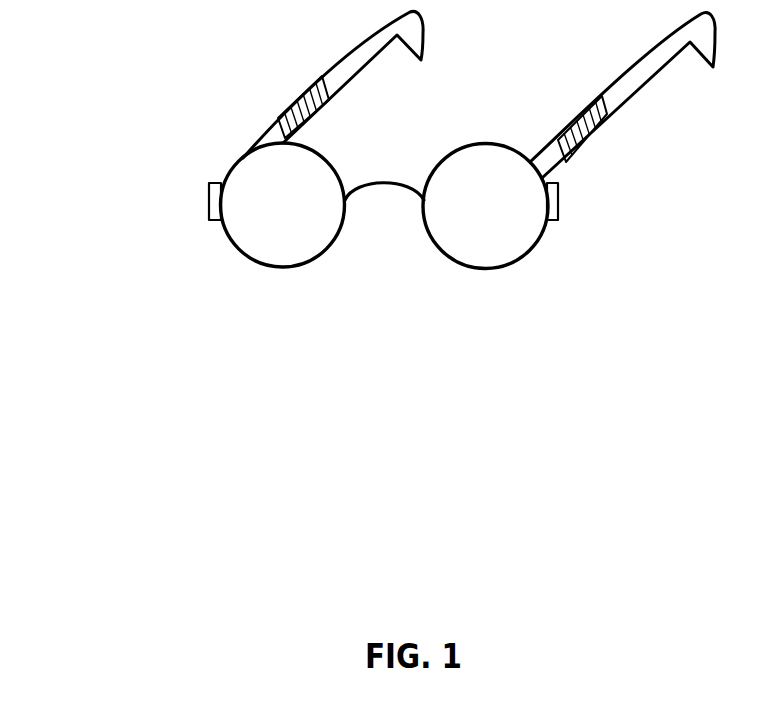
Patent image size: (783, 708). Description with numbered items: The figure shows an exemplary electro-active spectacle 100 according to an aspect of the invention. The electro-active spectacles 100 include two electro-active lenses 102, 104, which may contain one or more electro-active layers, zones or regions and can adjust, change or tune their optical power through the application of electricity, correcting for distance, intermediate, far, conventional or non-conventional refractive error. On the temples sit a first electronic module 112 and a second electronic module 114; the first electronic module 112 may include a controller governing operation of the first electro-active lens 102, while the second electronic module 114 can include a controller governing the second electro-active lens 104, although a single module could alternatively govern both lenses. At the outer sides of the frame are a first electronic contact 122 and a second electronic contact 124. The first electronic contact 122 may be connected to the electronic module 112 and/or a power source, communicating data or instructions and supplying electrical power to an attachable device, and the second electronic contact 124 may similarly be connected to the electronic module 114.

The electro-active spectacle 100 is at (402, 245).
The first electro-active lens 102 is at (282, 268).
The second electro-active lens 104 is at (487, 268).
The first electronic module 112 is at (292, 116).
The second electronic module 114 is at (593, 138).
The first electronic contact 122 is at (209, 202).
The second electronic contact 124 is at (558, 197).